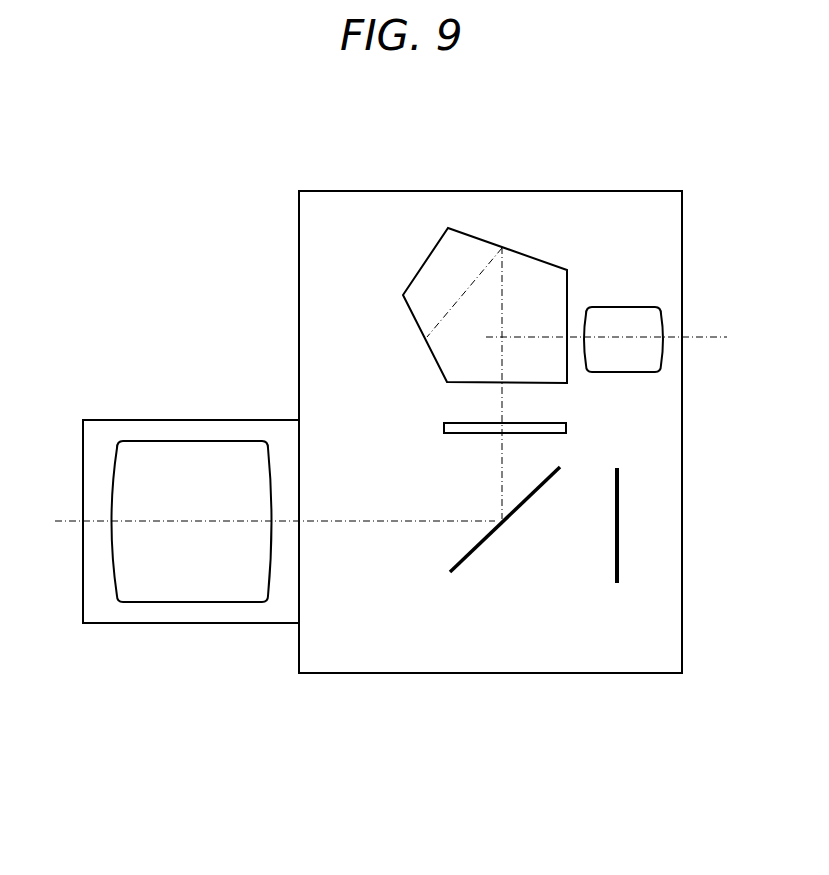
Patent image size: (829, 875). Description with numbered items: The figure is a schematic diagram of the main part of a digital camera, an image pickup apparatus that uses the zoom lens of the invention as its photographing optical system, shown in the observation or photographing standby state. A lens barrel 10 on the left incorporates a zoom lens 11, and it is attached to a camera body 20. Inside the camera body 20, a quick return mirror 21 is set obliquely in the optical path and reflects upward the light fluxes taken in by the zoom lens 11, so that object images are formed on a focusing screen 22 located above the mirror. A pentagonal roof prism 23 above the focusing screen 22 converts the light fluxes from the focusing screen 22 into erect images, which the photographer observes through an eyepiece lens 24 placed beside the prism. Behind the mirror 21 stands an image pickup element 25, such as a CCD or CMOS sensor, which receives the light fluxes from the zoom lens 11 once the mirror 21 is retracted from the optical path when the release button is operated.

The lens barrel 10 is at (177, 623).
The zoom lens 11 is at (192, 440).
The camera body 20 is at (552, 191).
The quick return mirror 21 is at (473, 560).
The focusing screen 22 is at (544, 423).
The pentagonal roof prism 23 is at (481, 249).
The eyepiece lens 24 is at (629, 307).
The image pickup element 25 is at (619, 532).